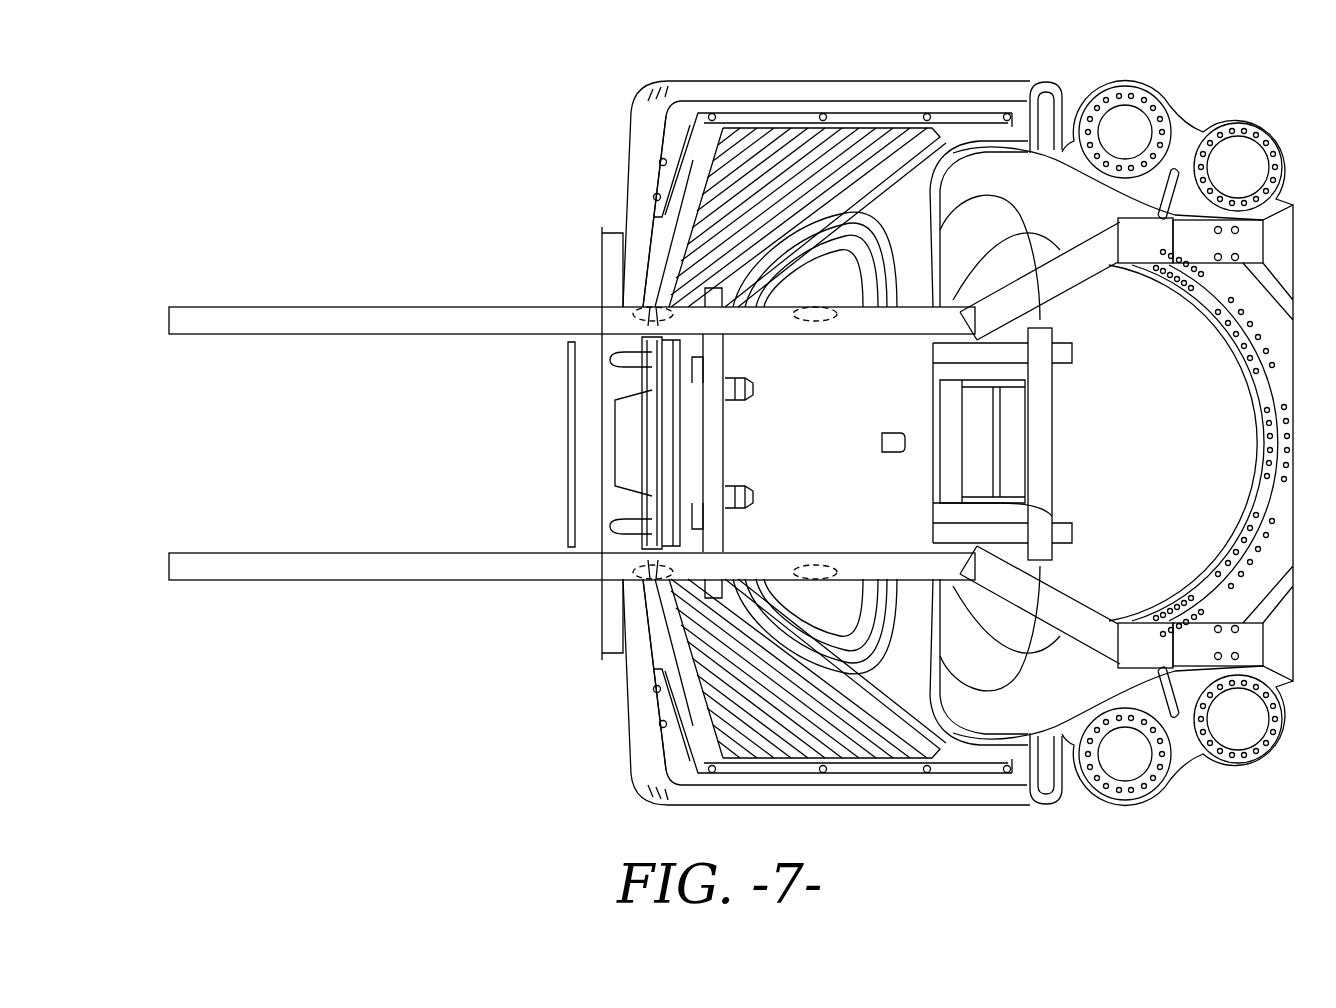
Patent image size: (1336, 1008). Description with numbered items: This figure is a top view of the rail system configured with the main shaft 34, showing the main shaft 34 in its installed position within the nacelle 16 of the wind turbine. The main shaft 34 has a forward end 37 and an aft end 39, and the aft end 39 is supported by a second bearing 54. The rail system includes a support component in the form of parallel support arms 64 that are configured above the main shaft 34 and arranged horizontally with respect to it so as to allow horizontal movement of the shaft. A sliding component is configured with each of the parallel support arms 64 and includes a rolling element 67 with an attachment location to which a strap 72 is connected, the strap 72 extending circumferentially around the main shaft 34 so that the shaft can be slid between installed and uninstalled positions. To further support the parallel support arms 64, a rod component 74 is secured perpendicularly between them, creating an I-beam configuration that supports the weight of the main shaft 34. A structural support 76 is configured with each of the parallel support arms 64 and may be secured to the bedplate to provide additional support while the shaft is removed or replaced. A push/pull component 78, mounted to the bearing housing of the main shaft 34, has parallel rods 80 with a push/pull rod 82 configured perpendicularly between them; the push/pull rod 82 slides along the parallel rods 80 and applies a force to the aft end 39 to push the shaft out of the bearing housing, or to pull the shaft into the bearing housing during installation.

The nacelle 16 is at (871, 83).
The main shaft 34 is at (1000, 560).
The forward end 37 is at (572, 548).
The aft end 39 is at (1050, 513).
The second bearing 54 is at (1027, 233).
The parallel support arms 64 is at (377, 305).
The rolling element 67 is at (665, 305).
The strap 72 is at (612, 528).
The rod component 74 is at (716, 295).
The structural support 76 is at (1072, 283).
The push/pull component 78 is at (1060, 387).
The parallel rods 80 is at (1060, 350).
The push/pull rod 82 is at (1052, 426).